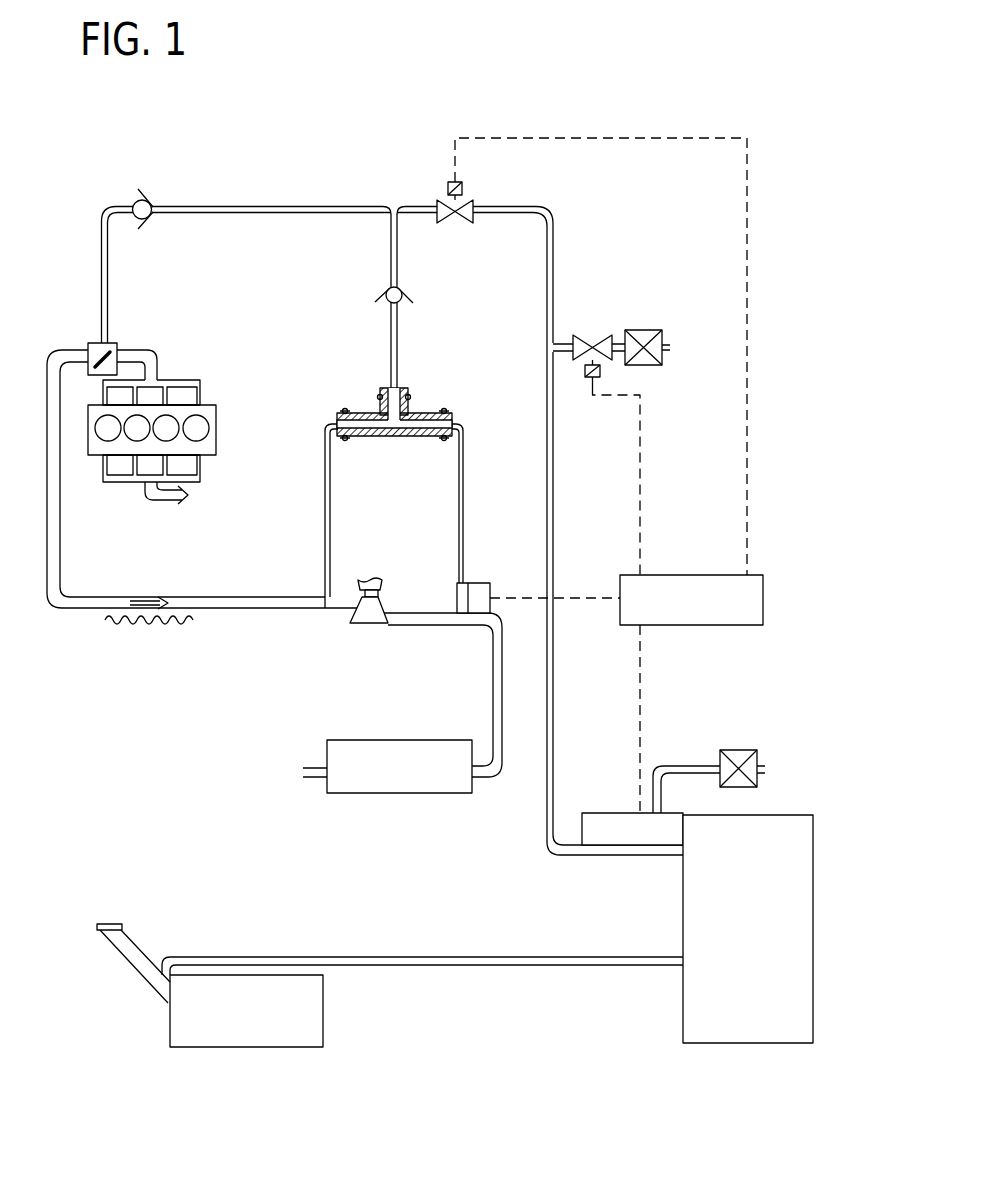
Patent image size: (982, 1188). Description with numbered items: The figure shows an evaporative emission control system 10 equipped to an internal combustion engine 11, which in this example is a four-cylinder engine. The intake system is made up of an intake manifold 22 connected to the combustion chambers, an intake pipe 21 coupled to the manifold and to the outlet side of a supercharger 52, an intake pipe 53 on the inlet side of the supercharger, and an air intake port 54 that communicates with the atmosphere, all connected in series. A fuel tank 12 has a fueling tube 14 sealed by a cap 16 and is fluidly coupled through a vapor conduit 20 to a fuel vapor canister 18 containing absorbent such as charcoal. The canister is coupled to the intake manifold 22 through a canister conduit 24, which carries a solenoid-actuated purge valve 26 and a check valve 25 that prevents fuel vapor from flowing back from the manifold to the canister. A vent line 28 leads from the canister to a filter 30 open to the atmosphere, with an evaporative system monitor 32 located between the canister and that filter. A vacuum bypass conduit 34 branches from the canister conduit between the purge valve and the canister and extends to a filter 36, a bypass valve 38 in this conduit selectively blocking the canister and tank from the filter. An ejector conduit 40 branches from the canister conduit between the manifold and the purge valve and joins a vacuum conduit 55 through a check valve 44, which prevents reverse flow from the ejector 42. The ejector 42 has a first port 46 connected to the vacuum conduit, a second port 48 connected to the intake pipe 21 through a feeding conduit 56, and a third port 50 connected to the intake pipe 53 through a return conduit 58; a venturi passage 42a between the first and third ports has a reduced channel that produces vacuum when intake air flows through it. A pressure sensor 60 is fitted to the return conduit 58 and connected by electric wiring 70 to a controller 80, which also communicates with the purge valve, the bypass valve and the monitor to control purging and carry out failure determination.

The evaporative emission control system 10 is at (746, 112).
The internal combustion engine 11 is at (208, 403).
The fuel tank 12 is at (323, 1003).
The fueling tube 14 is at (130, 953).
The cap 16 is at (110, 924).
The fuel vapor canister 18 is at (682, 988).
The vapor conduit 20 is at (327, 953).
The intake pipe 21 is at (62, 545).
The intake manifold 22 is at (187, 380).
The canister conduit 24 is at (553, 718).
The check valve 25 is at (152, 192).
The purge valve 26 is at (447, 183).
The vent line 28 is at (667, 765).
The filter 30 is at (740, 750).
The evaporative system monitor 32 is at (617, 813).
The vacuum bypass conduit 34 is at (562, 340).
The filter 36 is at (645, 330).
The bypass valve 38 is at (583, 337).
The ejector conduit 40 is at (391, 248).
The ejector 42 is at (389, 386).
The venturi passage 42a is at (408, 418).
The check valve 44 is at (405, 290).
The first port 46 is at (398, 390).
The second port 48 is at (342, 420).
The third port 50 is at (442, 420).
The supercharger 52 is at (367, 625).
The intake pipe 53 is at (493, 647).
The air intake port 54 is at (423, 795).
The vacuum conduit 55 is at (391, 325).
The feeding conduit 56 is at (326, 470).
The return conduit 58 is at (463, 466).
The pressure sensor 60 is at (481, 583).
The electric wiring 70 is at (570, 597).
The controller 80 is at (738, 625).